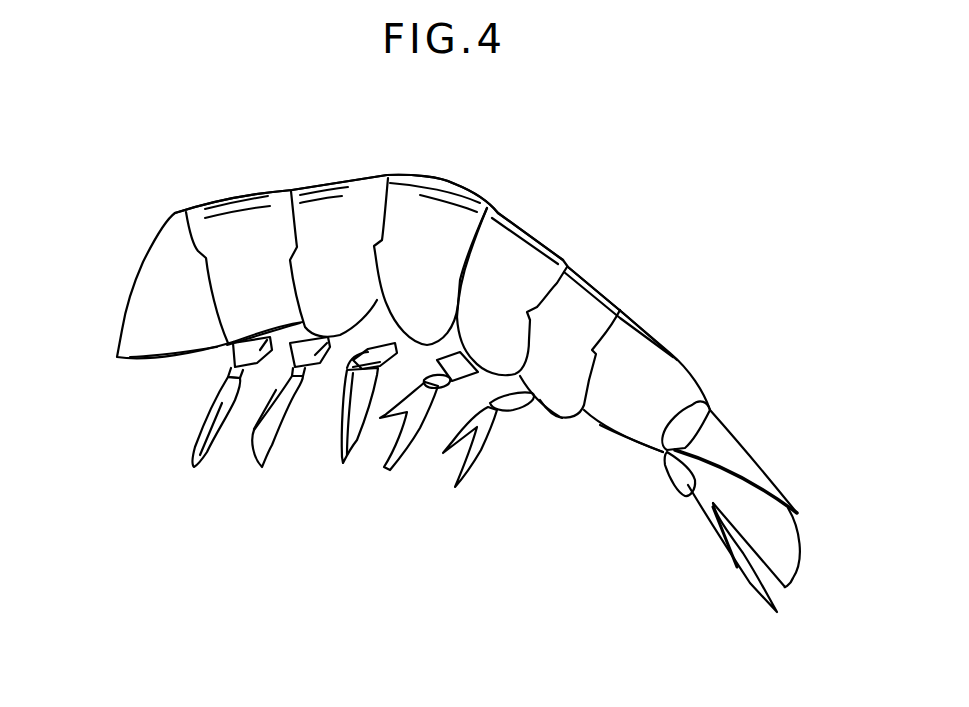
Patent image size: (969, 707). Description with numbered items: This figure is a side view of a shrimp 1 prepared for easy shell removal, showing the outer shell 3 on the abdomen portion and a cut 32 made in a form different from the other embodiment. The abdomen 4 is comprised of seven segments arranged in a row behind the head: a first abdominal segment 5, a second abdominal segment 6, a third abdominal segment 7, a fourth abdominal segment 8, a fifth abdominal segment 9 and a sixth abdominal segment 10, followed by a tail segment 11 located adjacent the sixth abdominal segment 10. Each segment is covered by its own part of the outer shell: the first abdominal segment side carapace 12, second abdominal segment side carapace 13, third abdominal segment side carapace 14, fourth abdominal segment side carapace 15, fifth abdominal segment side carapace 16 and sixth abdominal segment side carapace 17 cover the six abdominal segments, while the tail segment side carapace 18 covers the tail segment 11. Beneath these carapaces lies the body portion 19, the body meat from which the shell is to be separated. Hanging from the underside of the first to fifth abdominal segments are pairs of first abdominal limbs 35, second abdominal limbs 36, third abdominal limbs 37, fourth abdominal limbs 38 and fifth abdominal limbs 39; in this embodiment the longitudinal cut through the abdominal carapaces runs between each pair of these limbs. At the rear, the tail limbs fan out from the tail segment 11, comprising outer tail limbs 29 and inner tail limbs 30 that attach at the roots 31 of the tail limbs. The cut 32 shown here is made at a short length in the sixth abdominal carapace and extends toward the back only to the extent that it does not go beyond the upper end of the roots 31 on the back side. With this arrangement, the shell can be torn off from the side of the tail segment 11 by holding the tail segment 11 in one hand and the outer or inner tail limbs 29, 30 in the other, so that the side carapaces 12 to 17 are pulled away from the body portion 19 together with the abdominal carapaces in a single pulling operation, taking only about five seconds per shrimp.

The shrimp 1 is at (150, 214).
The outer shell 3 is at (568, 252).
The abdomen 4 is at (147, 428).
The first abdominal segment 5 is at (243, 182).
The second abdominal segment 6 is at (343, 170).
The third abdominal segment 7 is at (458, 178).
The fourth abdominal segment 8 is at (553, 230).
The fifth abdominal segment 9 is at (555, 432).
The sixth abdominal segment 10 is at (628, 455).
The tail segment 11 is at (748, 514).
The first abdominal segment side carapace 12 is at (226, 220).
The second abdominal segment side carapace 13 is at (323, 212).
The third abdominal segment side carapace 14 is at (420, 207).
The fourth abdominal segment side carapace 15 is at (510, 247).
The fifth abdominal segment side carapace 16 is at (597, 310).
The sixth abdominal segment side carapace 17 is at (663, 380).
The tail segment side carapace 18 is at (734, 470).
The body portion 19 is at (147, 298).
The outer tail limbs 29 is at (708, 520).
The inner tail limbs 30 is at (783, 551).
The roots of the tail limbs 31 is at (678, 487).
The cut 32 is at (700, 400).
The first abdominal limbs 35 is at (207, 452).
The second abdominal limbs 36 is at (279, 447).
The third abdominal limbs 37 is at (353, 450).
The fourth abdominal limbs 38 is at (388, 468).
The fifth abdominal limbs 39 is at (458, 488).